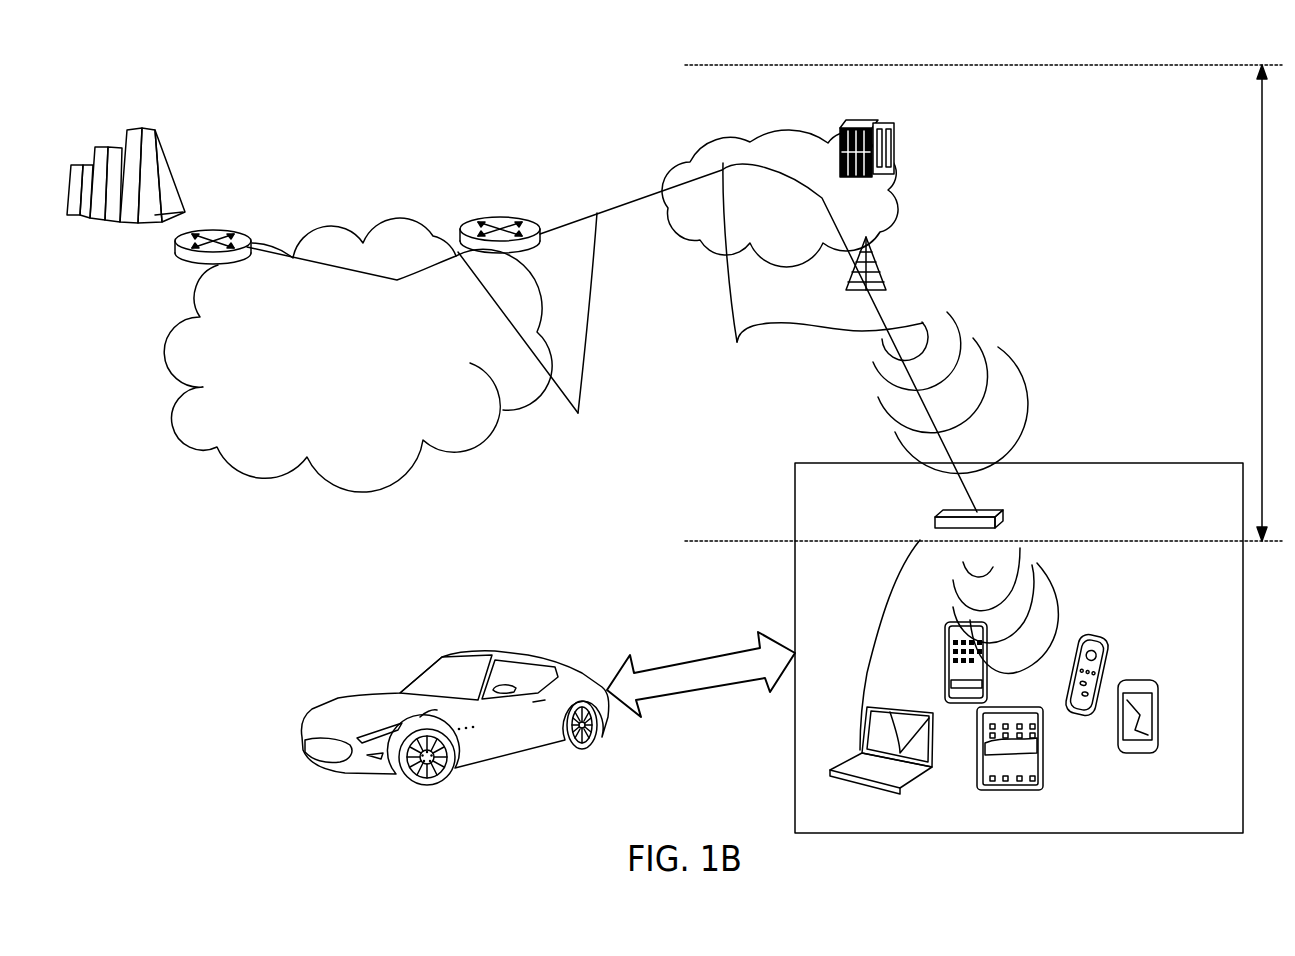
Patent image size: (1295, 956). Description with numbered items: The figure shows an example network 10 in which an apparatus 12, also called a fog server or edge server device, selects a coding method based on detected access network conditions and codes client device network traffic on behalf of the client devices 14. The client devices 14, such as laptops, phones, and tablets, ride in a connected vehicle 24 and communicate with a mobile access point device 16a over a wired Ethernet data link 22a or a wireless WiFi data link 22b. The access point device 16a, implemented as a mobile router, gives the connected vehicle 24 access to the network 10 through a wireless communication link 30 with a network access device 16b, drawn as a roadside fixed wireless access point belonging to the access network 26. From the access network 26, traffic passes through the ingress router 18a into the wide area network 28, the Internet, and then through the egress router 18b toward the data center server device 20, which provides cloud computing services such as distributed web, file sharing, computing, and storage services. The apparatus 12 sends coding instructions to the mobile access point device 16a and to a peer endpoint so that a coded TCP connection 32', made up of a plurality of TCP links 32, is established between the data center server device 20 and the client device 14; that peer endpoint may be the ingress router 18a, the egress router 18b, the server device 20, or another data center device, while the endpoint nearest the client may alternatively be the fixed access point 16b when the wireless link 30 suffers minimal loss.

The network 10 is at (543, 105).
The apparatus 12 is at (897, 132).
The client device 14 is at (945, 683).
The access point device 16a is at (997, 507).
The network access device 16b is at (882, 260).
The ingress router 18a is at (500, 216).
The egress router 18b is at (178, 264).
The data center server device 20 is at (172, 160).
The wired data link 22a is at (867, 660).
The wireless data link 22b is at (1051, 589).
The connected vehicle 24 is at (512, 753).
The access network 26 is at (717, 143).
The wide area network 28 is at (266, 477).
The wireless communication link 30 is at (1019, 367).
The TCP link 32 is at (690, 318).
The coded TCP connection 32' is at (758, 315).